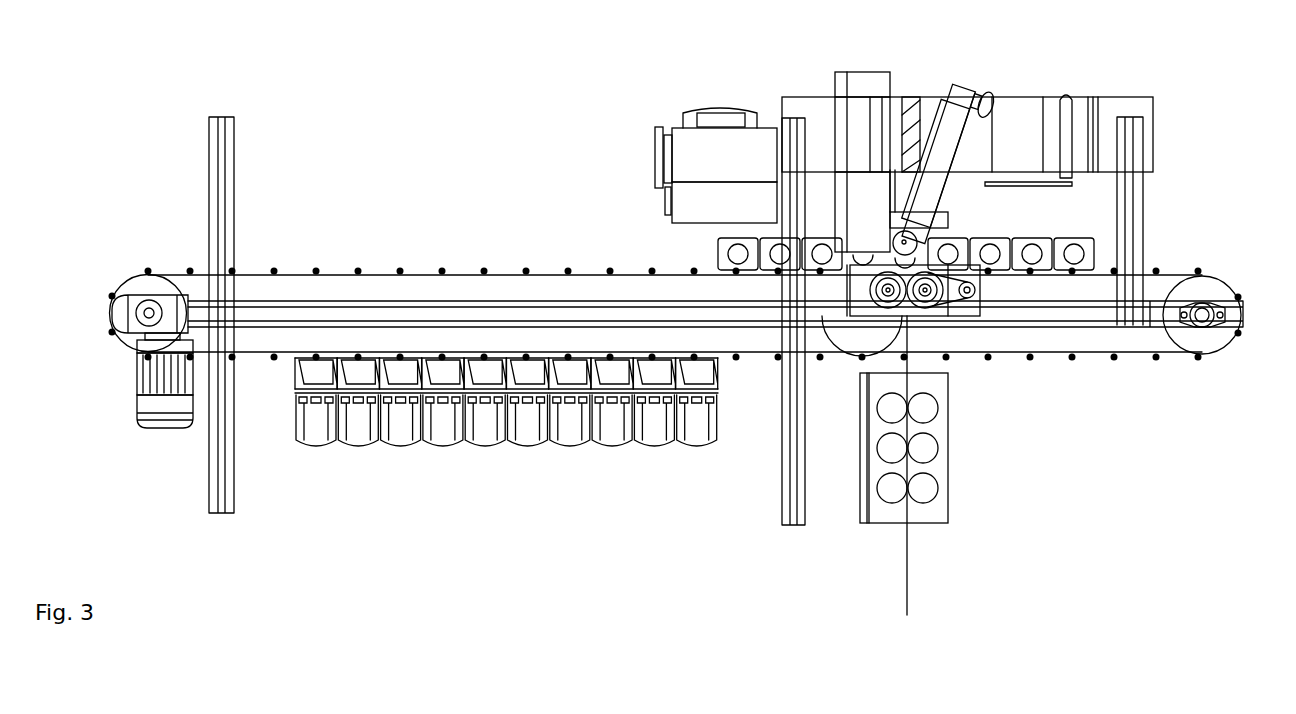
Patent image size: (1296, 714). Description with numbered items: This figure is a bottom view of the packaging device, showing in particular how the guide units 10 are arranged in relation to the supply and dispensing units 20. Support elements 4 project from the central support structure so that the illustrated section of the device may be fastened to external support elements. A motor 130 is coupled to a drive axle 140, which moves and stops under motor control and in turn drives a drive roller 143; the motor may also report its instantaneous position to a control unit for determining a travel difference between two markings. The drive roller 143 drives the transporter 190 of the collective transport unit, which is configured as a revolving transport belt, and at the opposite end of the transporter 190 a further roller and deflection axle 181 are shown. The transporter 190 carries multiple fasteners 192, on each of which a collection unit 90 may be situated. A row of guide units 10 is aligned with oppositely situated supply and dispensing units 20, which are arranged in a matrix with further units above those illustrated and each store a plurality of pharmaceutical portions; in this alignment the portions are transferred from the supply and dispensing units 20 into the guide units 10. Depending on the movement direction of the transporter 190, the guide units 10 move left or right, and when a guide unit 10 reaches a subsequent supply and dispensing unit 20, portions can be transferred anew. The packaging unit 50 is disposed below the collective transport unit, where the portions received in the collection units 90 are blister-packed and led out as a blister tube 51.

The support element 4 is at (209, 117).
The drive roller 143 is at (145, 283).
The drive axle 140 is at (146, 318).
The motor 130 is at (165, 405).
The transporter 190 is at (340, 270).
The fastener 192 is at (530, 270).
The guide unit 10 is at (305, 375).
The supply and dispensing unit 20 is at (320, 438).
The packaging unit 50 is at (695, 157).
The collection unit 90 is at (722, 247).
The blister tube 51 is at (907, 573).
The end pulley 181 is at (1205, 337).